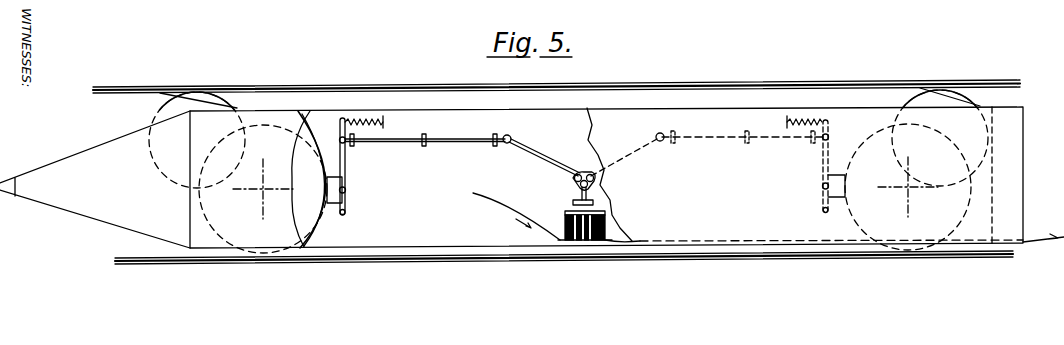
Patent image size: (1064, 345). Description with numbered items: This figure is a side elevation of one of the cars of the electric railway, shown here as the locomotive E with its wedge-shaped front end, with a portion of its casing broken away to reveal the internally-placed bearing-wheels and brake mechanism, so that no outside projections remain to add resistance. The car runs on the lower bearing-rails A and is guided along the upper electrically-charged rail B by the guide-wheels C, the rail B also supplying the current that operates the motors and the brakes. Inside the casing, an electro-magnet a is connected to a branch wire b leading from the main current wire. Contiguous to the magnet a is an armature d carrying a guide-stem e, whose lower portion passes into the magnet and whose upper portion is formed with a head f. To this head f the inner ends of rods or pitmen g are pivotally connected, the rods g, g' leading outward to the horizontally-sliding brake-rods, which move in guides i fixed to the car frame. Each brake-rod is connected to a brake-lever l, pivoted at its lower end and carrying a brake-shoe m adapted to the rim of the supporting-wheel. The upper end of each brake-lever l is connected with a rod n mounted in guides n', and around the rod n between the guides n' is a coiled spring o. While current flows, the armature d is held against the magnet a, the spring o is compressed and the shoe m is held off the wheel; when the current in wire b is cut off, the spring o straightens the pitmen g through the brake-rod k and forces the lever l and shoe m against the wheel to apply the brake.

The lower bearing-rails A is at (210, 270).
The upper electrically-charged rail B is at (322, 88).
The guide-wheels C is at (204, 96).
The locomotive E is at (262, 225).
The electro-magnets a is at (566, 222).
The branch wire b is at (768, 217).
The armature d is at (572, 202).
The guide-stem e is at (588, 187).
The head f is at (579, 174).
The rods or pitmen g is at (544, 157).
The connecting rod g' is at (615, 164).
The guides i is at (424, 147).
The brake rod k is at (584, 130).
The brake-levers l is at (346, 158).
The brake-shoes m is at (346, 192).
The rods n is at (586, 124).
The guides n' is at (358, 107).
The coiled springs o is at (366, 119).